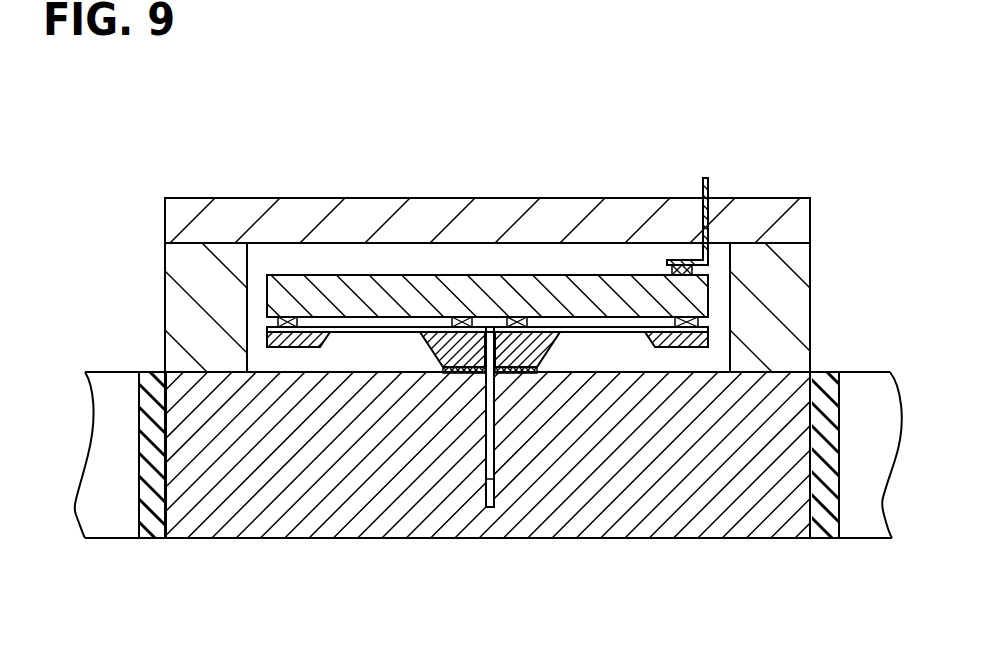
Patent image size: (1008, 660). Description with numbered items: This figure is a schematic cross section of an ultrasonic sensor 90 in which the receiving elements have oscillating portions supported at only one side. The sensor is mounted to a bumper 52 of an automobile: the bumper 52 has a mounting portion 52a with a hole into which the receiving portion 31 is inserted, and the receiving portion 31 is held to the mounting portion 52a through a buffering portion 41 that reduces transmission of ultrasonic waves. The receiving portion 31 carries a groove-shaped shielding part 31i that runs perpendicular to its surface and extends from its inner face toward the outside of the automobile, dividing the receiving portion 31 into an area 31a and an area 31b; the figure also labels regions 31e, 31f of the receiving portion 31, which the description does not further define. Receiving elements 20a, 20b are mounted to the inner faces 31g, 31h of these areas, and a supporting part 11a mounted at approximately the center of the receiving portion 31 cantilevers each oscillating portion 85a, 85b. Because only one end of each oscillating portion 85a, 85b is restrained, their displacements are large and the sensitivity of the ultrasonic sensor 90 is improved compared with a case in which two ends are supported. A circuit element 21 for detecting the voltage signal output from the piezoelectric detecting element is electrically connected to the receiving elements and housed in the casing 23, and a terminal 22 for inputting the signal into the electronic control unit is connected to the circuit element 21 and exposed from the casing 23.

The ultrasonic sensor 90 is at (768, 148).
The casing 23 is at (520, 197).
The receiving element 20a is at (267, 337).
The receiving element 20b is at (710, 336).
The circuit element 21 is at (463, 290).
The terminal 22 is at (708, 187).
The receiving portion 31 is at (513, 545).
The area 31a is at (240, 537).
The area 31b is at (707, 537).
The substrate bottom surface portion 31e is at (343, 537).
The substrate bottom surface portion 31f is at (625, 537).
The inner face 31g is at (388, 372).
The inner face 31h is at (624, 372).
The shielding part 31i is at (485, 480).
The supporting part 11a is at (448, 353).
The buffering portion 41 is at (160, 537).
The bumper 52 is at (103, 537).
The mounting portion 52a is at (150, 537).
The oscillating portion 85a is at (368, 326).
The oscillating portion 85b is at (605, 326).